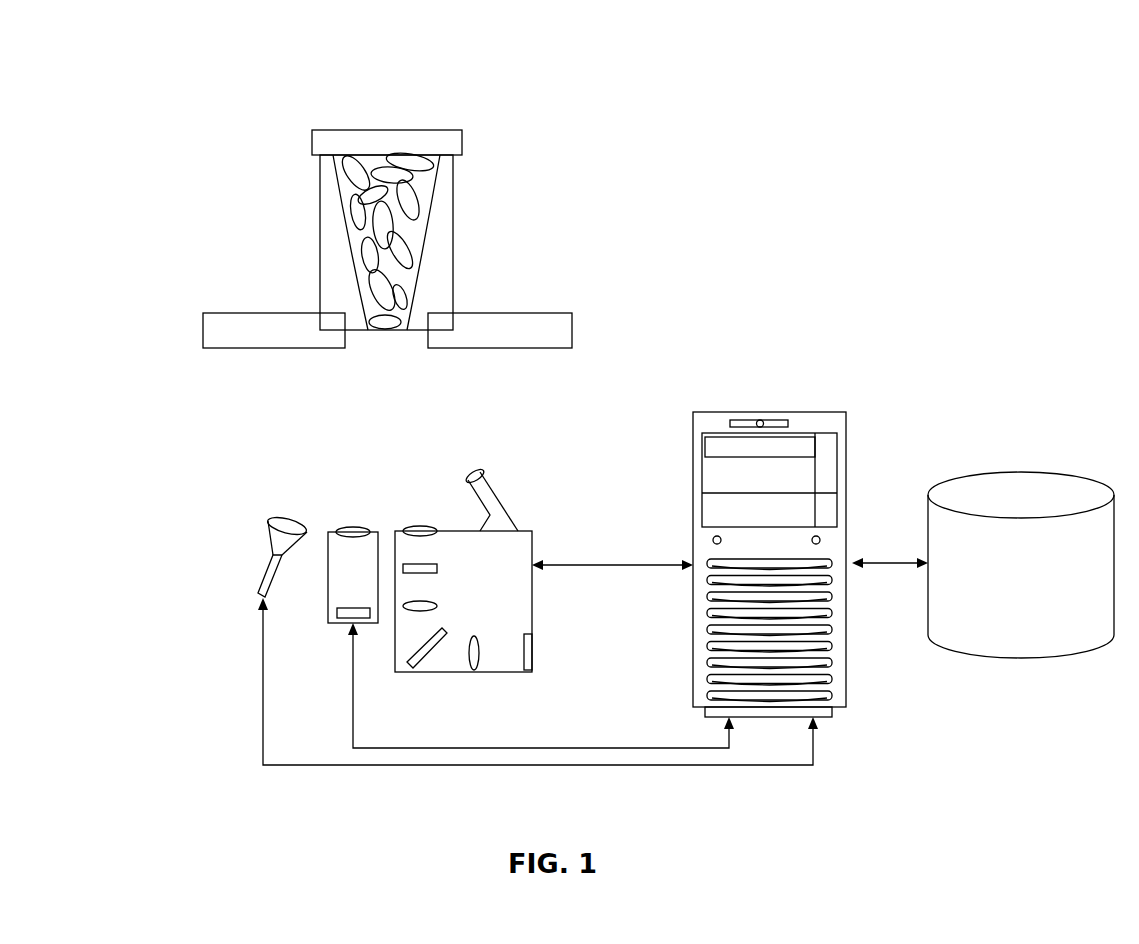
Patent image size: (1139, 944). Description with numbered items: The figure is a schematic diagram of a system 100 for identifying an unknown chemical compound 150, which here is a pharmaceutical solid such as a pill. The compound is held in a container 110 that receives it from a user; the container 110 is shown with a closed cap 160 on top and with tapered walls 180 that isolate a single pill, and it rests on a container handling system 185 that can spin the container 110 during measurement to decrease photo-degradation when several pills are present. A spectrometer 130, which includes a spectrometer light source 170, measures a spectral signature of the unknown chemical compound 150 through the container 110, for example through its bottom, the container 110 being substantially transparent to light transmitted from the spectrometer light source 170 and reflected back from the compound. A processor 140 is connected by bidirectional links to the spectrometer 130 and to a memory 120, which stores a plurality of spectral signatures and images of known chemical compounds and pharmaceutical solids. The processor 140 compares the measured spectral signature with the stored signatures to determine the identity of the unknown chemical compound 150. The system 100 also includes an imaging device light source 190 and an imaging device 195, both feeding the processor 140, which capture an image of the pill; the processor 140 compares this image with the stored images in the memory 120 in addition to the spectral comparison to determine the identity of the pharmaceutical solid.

The system 100 is at (726, 128).
The container 110 is at (320, 237).
The memory 120 is at (1016, 472).
The spectrometer 130 is at (532, 612).
The processor 140 is at (763, 412).
The unknown chemical compound 150 is at (417, 195).
The closed cap 160 is at (399, 130).
The spectrometer light source 170 is at (502, 493).
The tapered walls 180 is at (413, 257).
The container handling system 185 is at (203, 333).
The imaging device light source 190 is at (270, 540).
The imaging device 195 is at (322, 623).